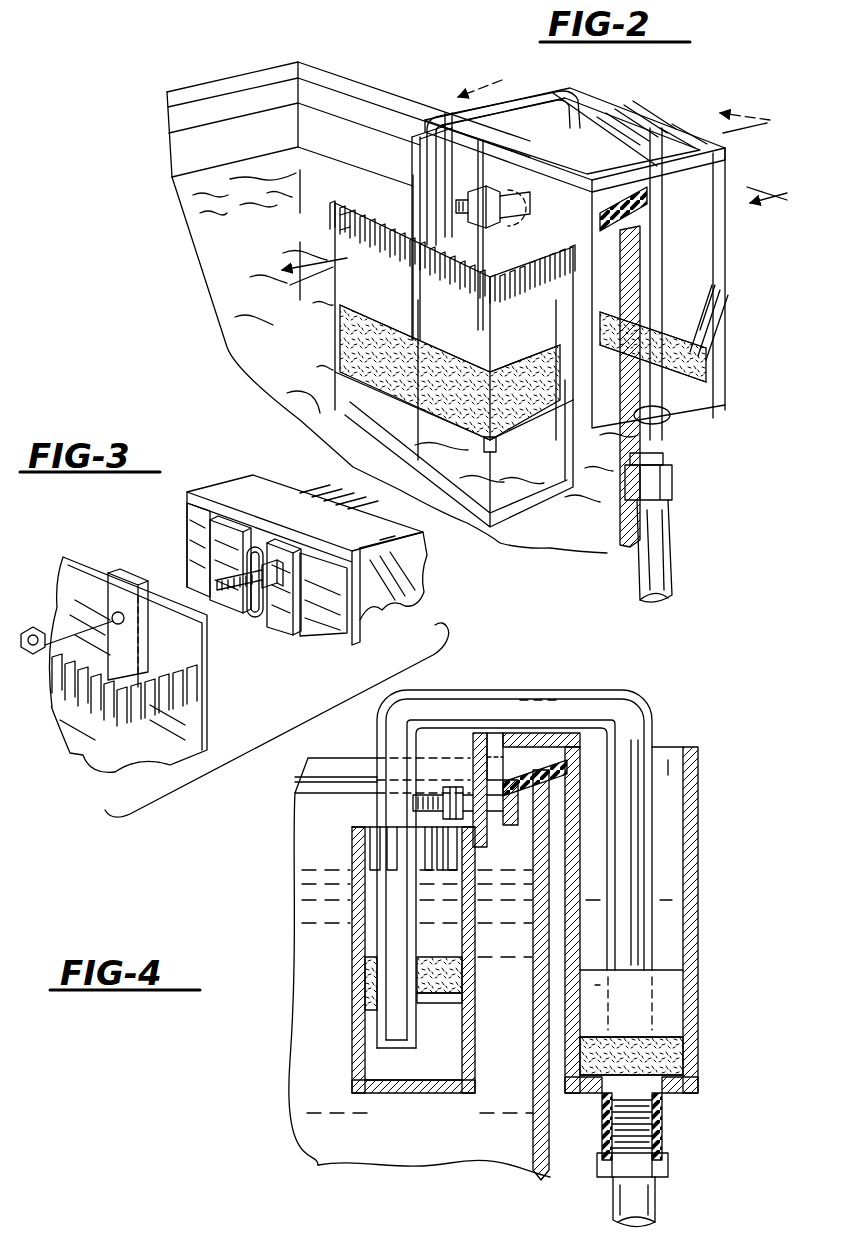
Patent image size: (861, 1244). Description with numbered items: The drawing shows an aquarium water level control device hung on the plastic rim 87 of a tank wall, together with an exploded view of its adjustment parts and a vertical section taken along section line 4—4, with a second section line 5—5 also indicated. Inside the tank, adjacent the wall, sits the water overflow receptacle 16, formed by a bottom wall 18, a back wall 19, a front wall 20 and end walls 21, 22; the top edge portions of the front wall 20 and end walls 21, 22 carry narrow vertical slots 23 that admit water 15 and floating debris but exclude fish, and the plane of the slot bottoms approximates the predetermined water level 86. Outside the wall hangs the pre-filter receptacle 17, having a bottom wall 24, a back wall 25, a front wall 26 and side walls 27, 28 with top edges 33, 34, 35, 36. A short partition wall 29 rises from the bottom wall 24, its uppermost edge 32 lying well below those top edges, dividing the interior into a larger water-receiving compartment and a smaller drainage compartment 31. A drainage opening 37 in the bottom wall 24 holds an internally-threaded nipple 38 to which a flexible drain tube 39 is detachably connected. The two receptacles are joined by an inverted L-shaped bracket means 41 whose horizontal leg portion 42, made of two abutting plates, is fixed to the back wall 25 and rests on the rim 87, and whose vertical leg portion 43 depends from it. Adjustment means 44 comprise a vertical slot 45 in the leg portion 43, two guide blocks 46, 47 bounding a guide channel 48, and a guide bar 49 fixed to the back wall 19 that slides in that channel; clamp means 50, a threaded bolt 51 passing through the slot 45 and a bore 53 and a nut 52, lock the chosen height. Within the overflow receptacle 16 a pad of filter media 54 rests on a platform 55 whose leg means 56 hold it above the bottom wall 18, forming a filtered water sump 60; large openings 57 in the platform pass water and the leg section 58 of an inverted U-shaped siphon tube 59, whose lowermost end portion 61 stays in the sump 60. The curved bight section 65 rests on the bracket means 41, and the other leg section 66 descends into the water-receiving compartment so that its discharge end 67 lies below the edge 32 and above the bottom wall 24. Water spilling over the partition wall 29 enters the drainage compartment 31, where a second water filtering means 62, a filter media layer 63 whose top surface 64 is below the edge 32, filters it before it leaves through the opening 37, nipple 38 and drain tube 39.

In FIG. 2, the section line 4— 4 is at (526, 199).
In FIG. 2, the section line 5- 5 is at (622, 144).
In FIG. 2, the water 15 is at (260, 247).
In FIG. 2, the water overflow receptacle 16 is at (333, 345).
In FIG. 2, the pre-filter receptacle 17 is at (730, 185).
In FIG. 4, the bottom wall 18 is at (395, 1088).
In FIG. 4, the back wall 19 is at (475, 1068).
In FIG. 2, the front wall 20 is at (410, 420).
In FIG. 4, the front wall 20 is at (362, 1015).
In FIG. 2, the end wall 21 is at (535, 475).
In FIG. 2, the end wall 22 is at (397, 217).
In FIG. 2, the slots 23 is at (393, 253).
In FIG. 3, the slots 23 is at (83, 707).
In FIG. 4, the bottom wall 24 is at (672, 1085).
In FIG. 2, the back wall 25 is at (645, 337).
In FIG. 3, the back wall 25 is at (398, 580).
In FIG. 4, the back wall 25 is at (548, 1070).
In FIG. 4, the front wall 26 is at (695, 880).
In FIG. 2, the side wall 27 is at (690, 375).
In FIG. 4, the side wall 28 is at (668, 755).
In FIG. 4, the partition wall 29 is at (665, 975).
In FIG. 4, the water-discharge or drainage compartment 31 is at (665, 965).
In FIG. 4, the uppermost edge 32 is at (680, 940).
In FIG. 4, the top edge 33 is at (570, 745).
In FIG. 2, the top edge 34 is at (620, 118).
In FIG. 4, the top edge 34 is at (700, 745).
In FIG. 2, the top edge 35 is at (677, 162).
In FIG. 2, the top edge 36 is at (558, 92).
In FIG. 4, the top edge 36 is at (655, 745).
In FIG. 4, the drainage opening 37 is at (600, 1085).
In FIG. 2, the internally-threaded nipple 38 is at (668, 445).
In FIG. 4, the internally-threaded nipple 38 is at (660, 1125).
In FIG. 2, the flexible drain tube 39 is at (665, 545).
In FIG. 4, the flexible drain tube 39 is at (635, 1200).
In FIG. 2, the bracket means 41 is at (520, 138).
In FIG. 3, the bracket means 41 is at (246, 478).
In FIG. 3, the horizontal leg portion 42 is at (378, 545).
In FIG. 3, the vertical leg portion 43 is at (335, 628).
In FIG. 3, the adjustment means 44 is at (210, 545).
In FIG. 3, the elongated slot 45 is at (258, 550).
In FIG. 3, the vertical guide block 46 is at (228, 600).
In FIG. 3, the vertical guide block 47 is at (290, 625).
In FIG. 3, the guide channel 48 is at (262, 630).
In FIG. 3, the guide bar 49 is at (120, 575).
In FIG. 4, the clamp means 50 is at (458, 785).
In FIG. 3, the threaded bolt 51 is at (235, 578).
In FIG. 4, the threaded bolt 51 is at (430, 800).
In FIG. 3, the nut 52 is at (30, 655).
In FIG. 3, the bore 53 is at (122, 623).
In FIG. 4, the filter media 54 is at (372, 965).
In FIG. 4, the platform 55 is at (448, 1000).
In FIG. 4, the leg means 56 is at (455, 1010).
In FIG. 4, the openings 57 is at (470, 1005).
In FIG. 4, the leg section 58 is at (390, 820).
In FIG. 4, the siphon tube 59 is at (532, 690).
In FIG. 4, the filtered water sump 60 is at (375, 1067).
In FIG. 4, the lowermost end portion 61 is at (415, 1025).
In FIG. 4, the second water filtering means 62 is at (683, 1028).
In FIG. 4, the filter media layer 63 is at (665, 1055).
In FIG. 4, the top surface 64 is at (600, 1035).
In FIG. 2, the curved bight section 65 is at (448, 120).
In FIG. 4, the curved bight section 65 is at (490, 710).
In FIG. 4, the leg section 66 is at (640, 847).
In FIG. 4, the discharge end 67 is at (665, 990).
In FIG. 2, the water level 86 is at (228, 160).
In FIG. 2, the rim 87 is at (355, 95).
In FIG. 4, the rim 87 is at (578, 778).